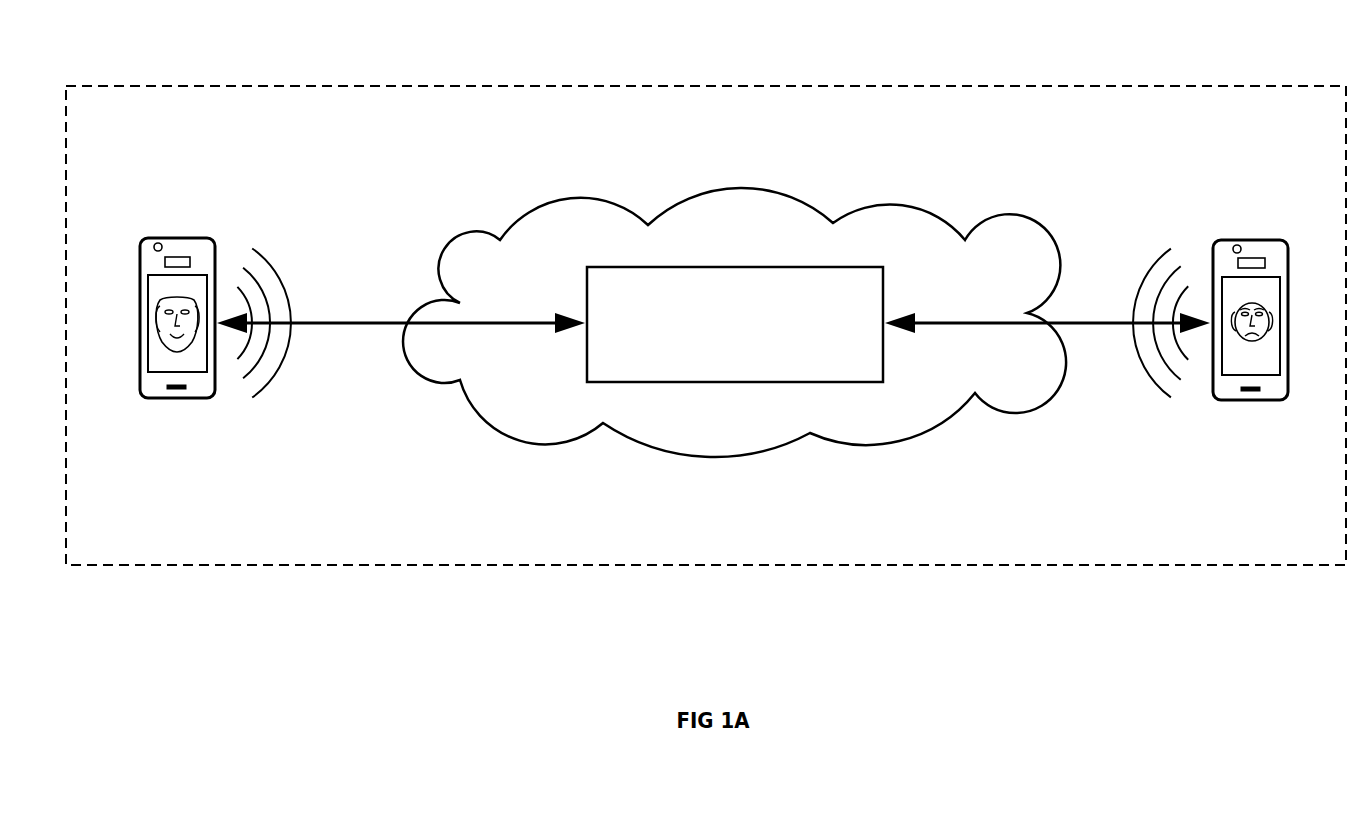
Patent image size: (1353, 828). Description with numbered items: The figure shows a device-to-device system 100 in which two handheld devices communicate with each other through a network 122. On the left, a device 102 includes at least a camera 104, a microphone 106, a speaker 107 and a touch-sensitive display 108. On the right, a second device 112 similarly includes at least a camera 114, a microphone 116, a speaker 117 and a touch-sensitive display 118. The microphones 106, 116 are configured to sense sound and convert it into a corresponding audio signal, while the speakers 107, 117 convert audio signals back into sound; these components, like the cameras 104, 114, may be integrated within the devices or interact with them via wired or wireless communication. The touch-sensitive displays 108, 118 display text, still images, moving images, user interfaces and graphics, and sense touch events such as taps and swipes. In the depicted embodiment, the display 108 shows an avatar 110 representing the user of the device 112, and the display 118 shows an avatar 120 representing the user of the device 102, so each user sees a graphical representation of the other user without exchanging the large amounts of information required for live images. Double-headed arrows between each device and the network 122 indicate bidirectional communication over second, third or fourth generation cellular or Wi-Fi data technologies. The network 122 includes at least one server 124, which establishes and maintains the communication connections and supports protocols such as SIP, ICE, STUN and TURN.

The device-to-device system 100 is at (145, 86).
The device 102 is at (200, 238).
The camera 104 is at (150, 242).
The microphone 106 is at (182, 391).
The speaker 107 is at (178, 257).
The touch-sensitive display 108 is at (148, 302).
The avatar 110 is at (163, 342).
The device 112 is at (1258, 240).
The camera 114 is at (1235, 247).
The microphone 116 is at (1238, 391).
The speaker 117 is at (1253, 258).
The touch-sensitive display 118 is at (1279, 293).
The avatar 120 is at (1260, 335).
The network 122 is at (535, 205).
The server 124 is at (735, 324).